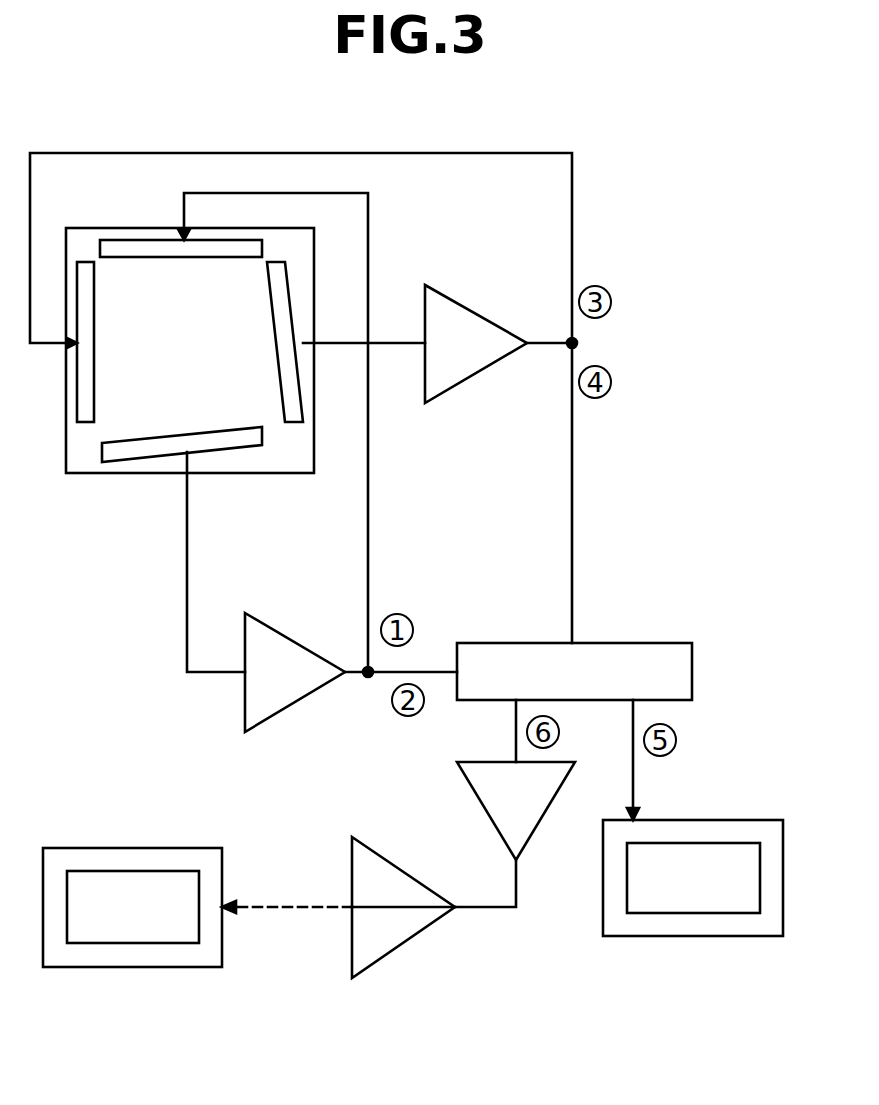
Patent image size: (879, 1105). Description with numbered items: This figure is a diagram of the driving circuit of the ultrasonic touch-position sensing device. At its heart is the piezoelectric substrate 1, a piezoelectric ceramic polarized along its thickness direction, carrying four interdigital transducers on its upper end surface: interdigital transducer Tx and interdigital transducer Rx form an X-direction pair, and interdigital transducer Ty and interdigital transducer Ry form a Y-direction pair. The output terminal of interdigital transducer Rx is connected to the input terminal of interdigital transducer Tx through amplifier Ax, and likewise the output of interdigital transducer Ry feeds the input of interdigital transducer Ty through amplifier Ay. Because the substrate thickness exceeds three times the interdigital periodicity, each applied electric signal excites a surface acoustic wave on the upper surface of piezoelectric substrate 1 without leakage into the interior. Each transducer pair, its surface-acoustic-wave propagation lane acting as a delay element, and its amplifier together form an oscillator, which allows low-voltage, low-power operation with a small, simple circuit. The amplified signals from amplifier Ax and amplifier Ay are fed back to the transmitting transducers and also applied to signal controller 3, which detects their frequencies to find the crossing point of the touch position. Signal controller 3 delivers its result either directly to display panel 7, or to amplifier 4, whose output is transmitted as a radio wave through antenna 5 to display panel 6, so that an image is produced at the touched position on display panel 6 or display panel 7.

The piezoelectric substrate 1 is at (285, 458).
The interdigital transducer Tx is at (148, 238).
The interdigital transducer Ty is at (78, 382).
The interdigital transducer Rx is at (132, 462).
The interdigital transducer Ry is at (291, 290).
The amplifier Ax is at (295, 672).
The amplifier Ay is at (476, 344).
The signal controller 3 is at (574, 671).
The amplifier 4 is at (516, 811).
The antenna 5 is at (403, 907).
The display panel 6 is at (132, 907).
The display panel 7 is at (693, 878).